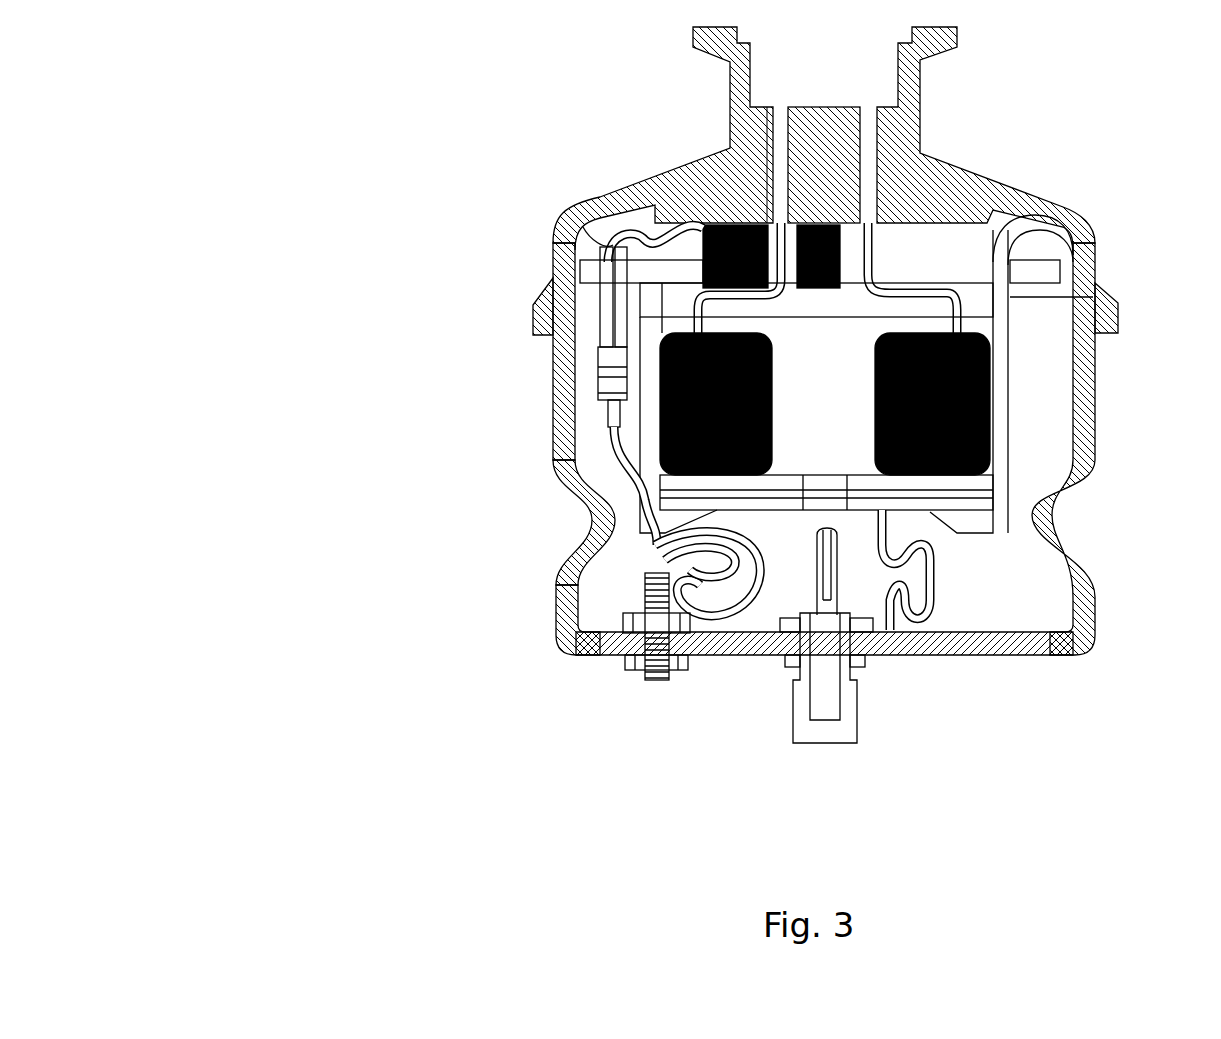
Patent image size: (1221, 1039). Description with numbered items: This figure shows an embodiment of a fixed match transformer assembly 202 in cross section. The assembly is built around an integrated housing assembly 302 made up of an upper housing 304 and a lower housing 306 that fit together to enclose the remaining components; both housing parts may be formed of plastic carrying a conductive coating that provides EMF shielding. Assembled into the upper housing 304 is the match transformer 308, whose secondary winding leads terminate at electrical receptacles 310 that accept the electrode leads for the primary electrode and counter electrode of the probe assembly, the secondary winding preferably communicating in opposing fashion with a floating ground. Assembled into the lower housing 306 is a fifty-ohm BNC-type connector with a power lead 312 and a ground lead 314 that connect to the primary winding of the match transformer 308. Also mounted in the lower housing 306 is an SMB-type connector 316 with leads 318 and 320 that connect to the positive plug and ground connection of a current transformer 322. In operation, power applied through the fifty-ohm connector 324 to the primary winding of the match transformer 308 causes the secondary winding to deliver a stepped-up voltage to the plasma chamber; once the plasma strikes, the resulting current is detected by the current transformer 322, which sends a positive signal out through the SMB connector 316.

The fixed match transformer assembly 202 is at (225, 710).
The integrated housing assembly 302 is at (721, 435).
The upper housing 304 is at (727, 150).
The lower housing 306 is at (517, 449).
The match transformer 308 is at (990, 392).
The electrical receptacles 310 is at (797, 143).
The power lead of BNC-type connector 312 is at (805, 560).
The ground lead of BNC-type connector 314 is at (890, 620).
The SMB-type connector 316 is at (650, 678).
The SMB connector lead 318 is at (600, 500).
The SMB connector lead 320 is at (615, 464).
The current transformer 322 is at (703, 227).
The 50-ohm connector 324 is at (853, 680).